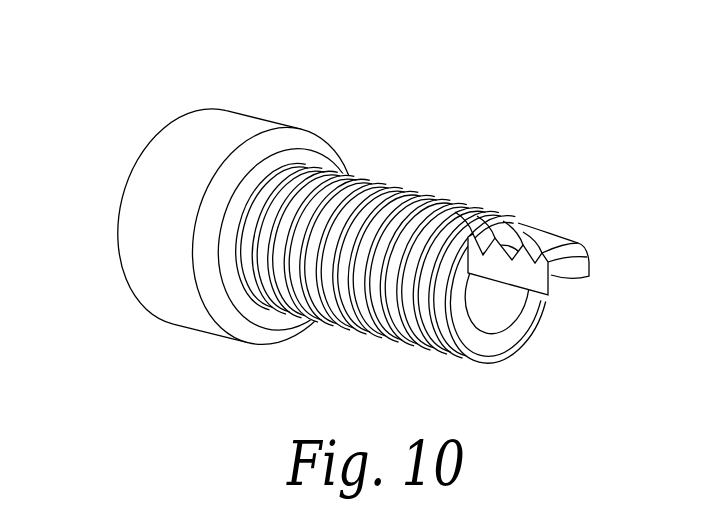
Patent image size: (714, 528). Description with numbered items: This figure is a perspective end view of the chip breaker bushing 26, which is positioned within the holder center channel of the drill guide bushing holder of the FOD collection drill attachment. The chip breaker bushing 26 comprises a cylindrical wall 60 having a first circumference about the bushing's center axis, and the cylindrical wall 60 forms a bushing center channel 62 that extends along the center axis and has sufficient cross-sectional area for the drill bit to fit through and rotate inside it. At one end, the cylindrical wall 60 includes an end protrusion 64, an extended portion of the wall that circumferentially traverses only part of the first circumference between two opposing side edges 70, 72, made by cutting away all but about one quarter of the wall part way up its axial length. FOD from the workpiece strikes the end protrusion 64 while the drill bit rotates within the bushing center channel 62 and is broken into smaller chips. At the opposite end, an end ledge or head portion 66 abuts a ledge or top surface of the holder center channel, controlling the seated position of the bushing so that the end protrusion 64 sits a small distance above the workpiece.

The chip breaker bushing 26 is at (359, 224).
The cylindrical wall 60 is at (352, 333).
The bushing center channel 62 is at (503, 325).
The end protrusion 64 is at (590, 264).
The head portion 66 is at (128, 268).
The side edge 70 is at (505, 252).
The side edge 72 is at (596, 286).